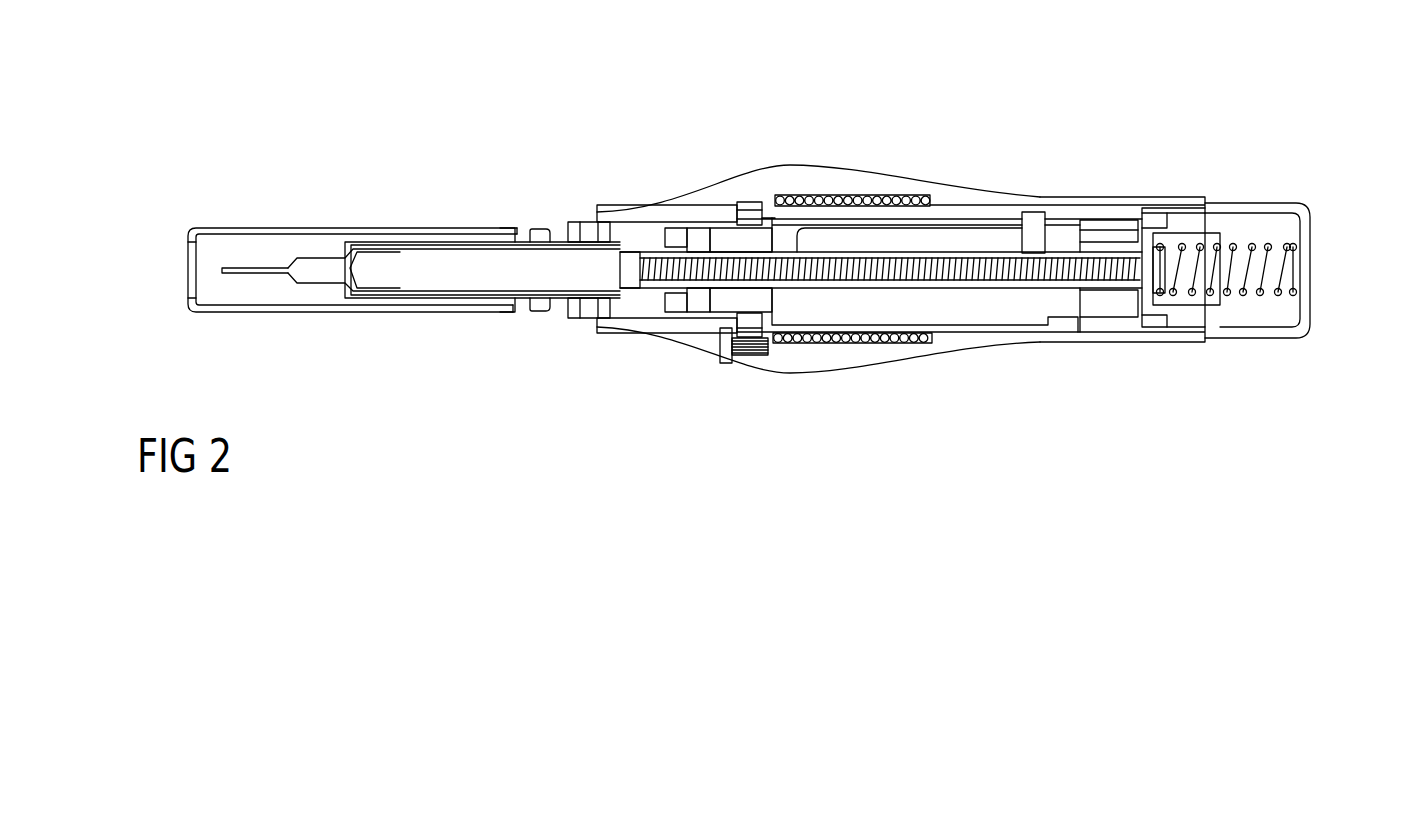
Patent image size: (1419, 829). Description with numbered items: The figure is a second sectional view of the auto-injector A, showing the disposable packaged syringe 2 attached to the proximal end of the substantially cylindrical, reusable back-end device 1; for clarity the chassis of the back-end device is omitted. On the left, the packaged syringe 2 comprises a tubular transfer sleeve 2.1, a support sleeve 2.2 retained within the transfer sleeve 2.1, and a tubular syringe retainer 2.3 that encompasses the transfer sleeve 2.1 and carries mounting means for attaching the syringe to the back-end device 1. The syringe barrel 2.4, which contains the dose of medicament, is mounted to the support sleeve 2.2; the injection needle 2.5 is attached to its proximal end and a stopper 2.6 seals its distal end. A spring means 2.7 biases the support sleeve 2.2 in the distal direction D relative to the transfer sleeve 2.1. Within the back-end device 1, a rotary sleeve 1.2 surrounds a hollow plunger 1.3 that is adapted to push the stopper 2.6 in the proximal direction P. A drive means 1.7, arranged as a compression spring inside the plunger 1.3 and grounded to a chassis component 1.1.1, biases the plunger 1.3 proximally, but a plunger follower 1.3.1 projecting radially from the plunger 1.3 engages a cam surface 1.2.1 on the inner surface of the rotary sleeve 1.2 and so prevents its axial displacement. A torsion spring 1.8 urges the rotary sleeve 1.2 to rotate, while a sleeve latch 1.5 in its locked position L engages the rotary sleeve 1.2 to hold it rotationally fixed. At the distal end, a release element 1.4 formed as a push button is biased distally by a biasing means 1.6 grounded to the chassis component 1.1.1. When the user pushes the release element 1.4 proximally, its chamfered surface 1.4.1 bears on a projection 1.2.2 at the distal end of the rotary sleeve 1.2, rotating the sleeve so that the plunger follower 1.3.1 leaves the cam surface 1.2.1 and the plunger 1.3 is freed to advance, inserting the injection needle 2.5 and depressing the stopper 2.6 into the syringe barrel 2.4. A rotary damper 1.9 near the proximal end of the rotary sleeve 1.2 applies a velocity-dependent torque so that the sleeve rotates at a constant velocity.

The back-end device 1 is at (837, 182).
The chassis component 1.1.1 is at (1168, 210).
The rotary sleeve 1.2 is at (980, 328).
The cam surface 1.2.1 is at (915, 220).
The projection 1.2.2 is at (1102, 235).
The plunger 1.3 is at (976, 250).
The plunger follower 1.3.1 is at (1037, 220).
The release element 1.4 is at (1268, 333).
The chamfered surface 1.4.1 is at (1147, 210).
The sleeve latch 1.5 is at (765, 220).
The biasing means 1.6 is at (1208, 293).
The drive means 1.7 is at (1085, 240).
The torsion spring 1.8 is at (867, 340).
The rotary damper 1.9 is at (740, 358).
The packaged syringe 2 is at (417, 218).
The transfer sleeve 2.1 is at (262, 308).
The support sleeve 2.2 is at (363, 292).
The syringe retainer 2.3 is at (552, 310).
The syringe barrel 2.4 is at (422, 290).
The injection needle 2.5 is at (234, 266).
The stopper 2.6 is at (567, 255).
The spring means 2.7 is at (612, 233).
The auto-injector A is at (160, 100).
The proximal direction P is at (116, 272).
The distal direction D is at (1358, 272).
The locked position L is at (693, 330).